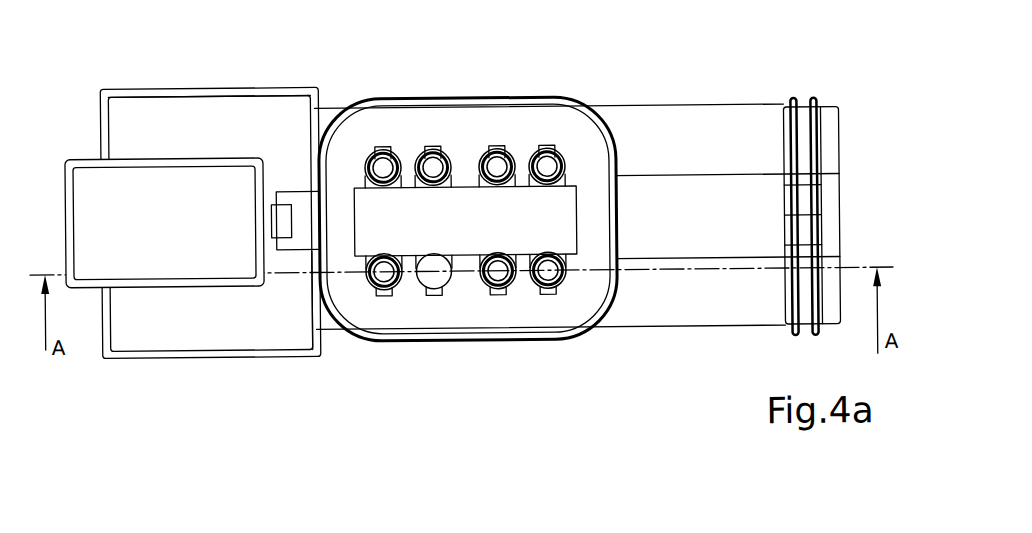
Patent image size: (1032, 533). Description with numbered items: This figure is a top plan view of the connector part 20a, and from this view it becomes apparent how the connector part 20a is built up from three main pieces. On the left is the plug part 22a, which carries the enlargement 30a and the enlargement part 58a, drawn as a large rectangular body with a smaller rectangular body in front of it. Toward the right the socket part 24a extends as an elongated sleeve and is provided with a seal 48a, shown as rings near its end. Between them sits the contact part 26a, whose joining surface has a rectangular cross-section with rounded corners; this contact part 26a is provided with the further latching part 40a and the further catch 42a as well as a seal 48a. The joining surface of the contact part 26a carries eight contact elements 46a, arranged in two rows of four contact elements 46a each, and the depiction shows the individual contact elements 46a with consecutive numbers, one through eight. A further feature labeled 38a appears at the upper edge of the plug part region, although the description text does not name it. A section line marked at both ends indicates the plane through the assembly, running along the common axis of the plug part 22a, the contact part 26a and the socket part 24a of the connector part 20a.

The connector part 20a is at (558, 86).
The plug part 22a is at (218, 131).
The socket part 24a is at (730, 127).
The contact part 26a is at (465, 127).
The enlargement 30a is at (240, 338).
The cover wall 38a is at (208, 48).
The further latching part 40a is at (295, 193).
The further catch 42a is at (277, 248).
The contact elements 46a is at (535, 294).
The seal 48a is at (797, 103).
The enlargement part 58a is at (115, 232).